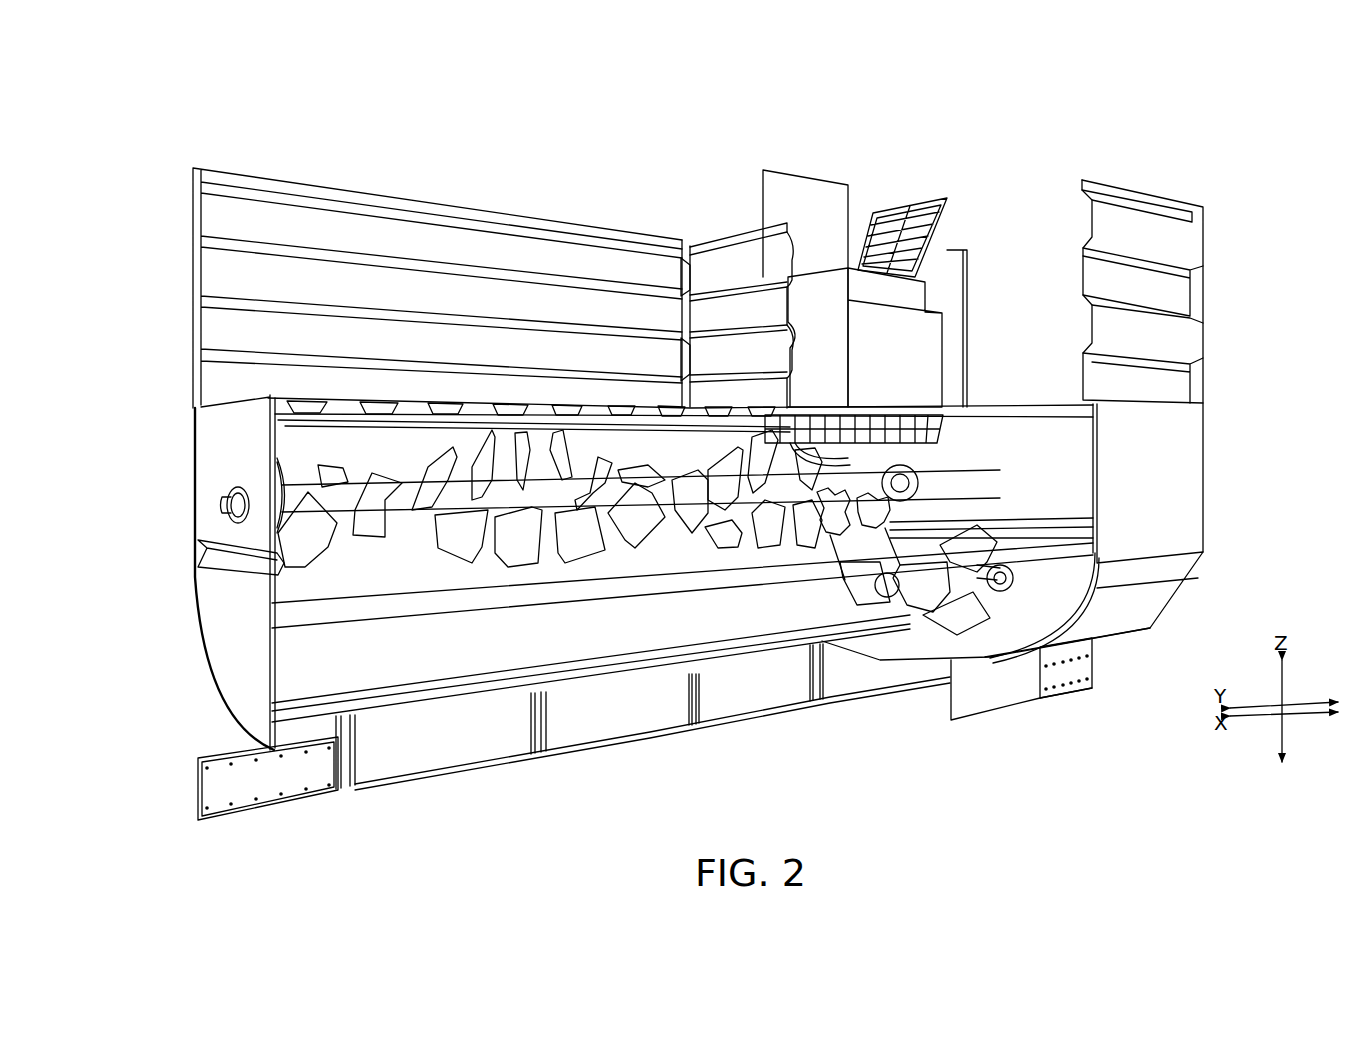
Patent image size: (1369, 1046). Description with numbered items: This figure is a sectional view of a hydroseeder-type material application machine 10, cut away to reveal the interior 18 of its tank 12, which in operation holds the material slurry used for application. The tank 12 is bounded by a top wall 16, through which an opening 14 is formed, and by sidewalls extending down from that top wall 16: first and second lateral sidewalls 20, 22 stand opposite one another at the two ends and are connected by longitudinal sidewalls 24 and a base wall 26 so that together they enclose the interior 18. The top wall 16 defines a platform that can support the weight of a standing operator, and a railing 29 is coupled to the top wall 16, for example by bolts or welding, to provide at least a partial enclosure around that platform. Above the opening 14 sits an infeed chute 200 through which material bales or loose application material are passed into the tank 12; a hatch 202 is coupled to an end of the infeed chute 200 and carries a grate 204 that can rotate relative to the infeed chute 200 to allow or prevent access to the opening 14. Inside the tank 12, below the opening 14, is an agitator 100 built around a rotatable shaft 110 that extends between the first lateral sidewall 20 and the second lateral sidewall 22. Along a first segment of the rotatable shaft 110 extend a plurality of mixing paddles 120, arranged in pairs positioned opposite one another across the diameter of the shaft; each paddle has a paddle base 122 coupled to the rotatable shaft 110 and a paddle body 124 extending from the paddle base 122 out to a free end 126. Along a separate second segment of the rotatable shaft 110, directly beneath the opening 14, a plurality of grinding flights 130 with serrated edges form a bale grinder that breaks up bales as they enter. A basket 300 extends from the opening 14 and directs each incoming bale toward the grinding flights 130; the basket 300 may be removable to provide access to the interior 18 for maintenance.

The material application machine 10 is at (125, 162).
The tank 12 is at (195, 458).
The opening 14 is at (1097, 120).
The top wall 16 is at (214, 403).
The interior 18 is at (279, 697).
The first lateral sidewall 20 is at (1030, 478).
The second lateral sidewall 22 is at (200, 596).
The longitudinal sidewalls 24 is at (1204, 500).
The base wall 26 is at (893, 662).
The railing 29 is at (710, 243).
The agitator 100 is at (369, 600).
The rotatable shaft 110 is at (403, 520).
The mixing paddles 120 is at (602, 566).
The paddle base 122 is at (578, 482).
The paddle body 124 is at (615, 537).
The free end 126 is at (562, 580).
The grinding flights 130 is at (905, 532).
The infeed chute 200 is at (950, 272).
The hatch 202 is at (830, 270).
The grate 204 is at (915, 212).
The basket 300 is at (950, 440).